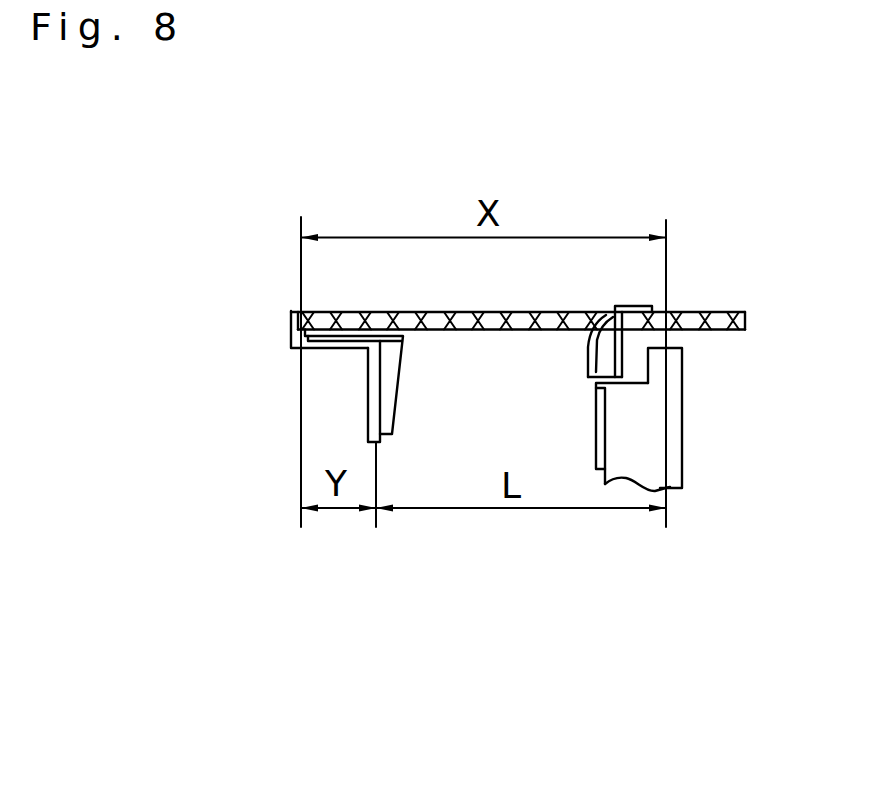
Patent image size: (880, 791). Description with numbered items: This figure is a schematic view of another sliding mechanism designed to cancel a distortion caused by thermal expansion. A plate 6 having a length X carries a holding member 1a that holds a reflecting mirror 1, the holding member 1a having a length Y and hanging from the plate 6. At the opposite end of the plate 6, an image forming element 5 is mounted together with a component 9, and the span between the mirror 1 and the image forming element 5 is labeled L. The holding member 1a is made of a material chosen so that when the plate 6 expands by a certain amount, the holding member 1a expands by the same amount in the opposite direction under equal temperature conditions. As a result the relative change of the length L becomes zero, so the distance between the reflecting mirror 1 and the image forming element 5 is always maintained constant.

The reflecting mirror 1 is at (395, 388).
The holding member 1a is at (327, 348).
The image forming element 5 is at (605, 417).
The plate 6 is at (710, 313).
The component 9 is at (685, 455).